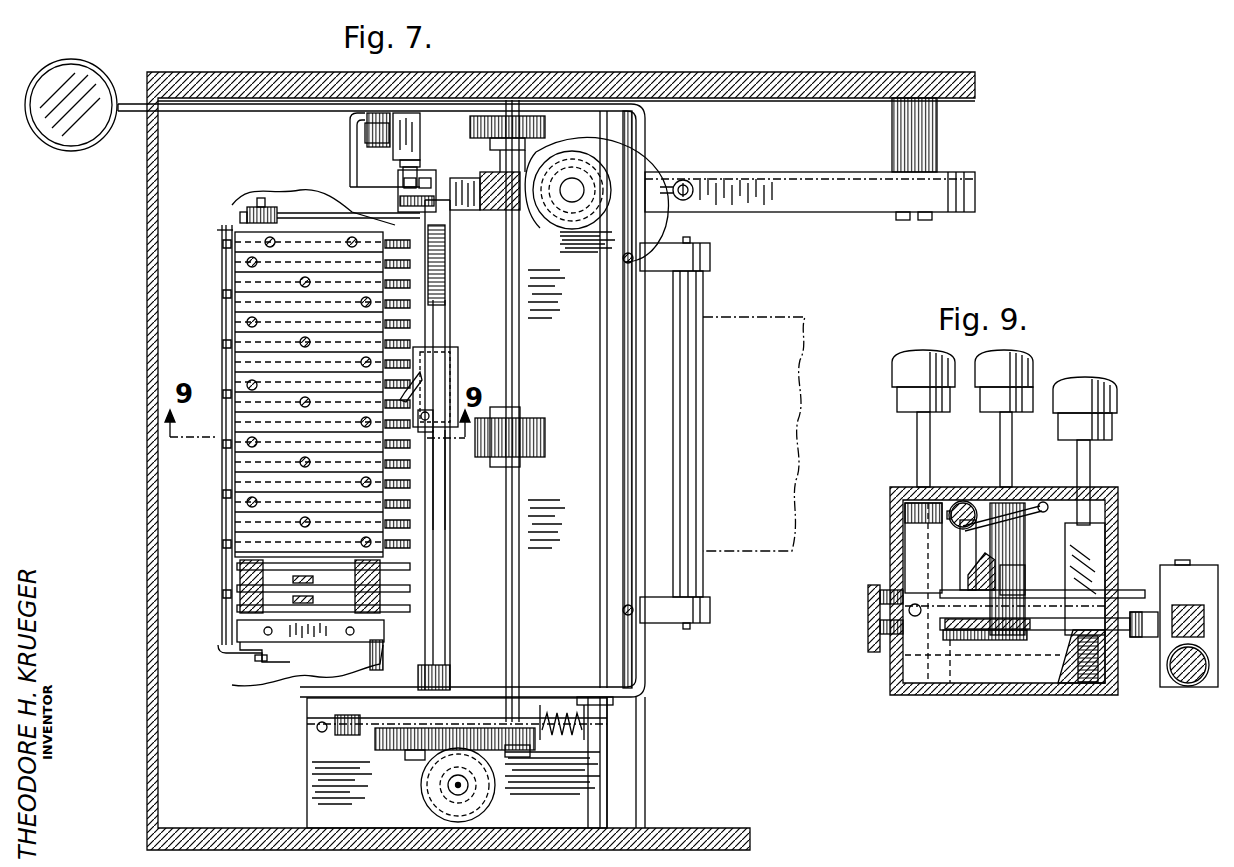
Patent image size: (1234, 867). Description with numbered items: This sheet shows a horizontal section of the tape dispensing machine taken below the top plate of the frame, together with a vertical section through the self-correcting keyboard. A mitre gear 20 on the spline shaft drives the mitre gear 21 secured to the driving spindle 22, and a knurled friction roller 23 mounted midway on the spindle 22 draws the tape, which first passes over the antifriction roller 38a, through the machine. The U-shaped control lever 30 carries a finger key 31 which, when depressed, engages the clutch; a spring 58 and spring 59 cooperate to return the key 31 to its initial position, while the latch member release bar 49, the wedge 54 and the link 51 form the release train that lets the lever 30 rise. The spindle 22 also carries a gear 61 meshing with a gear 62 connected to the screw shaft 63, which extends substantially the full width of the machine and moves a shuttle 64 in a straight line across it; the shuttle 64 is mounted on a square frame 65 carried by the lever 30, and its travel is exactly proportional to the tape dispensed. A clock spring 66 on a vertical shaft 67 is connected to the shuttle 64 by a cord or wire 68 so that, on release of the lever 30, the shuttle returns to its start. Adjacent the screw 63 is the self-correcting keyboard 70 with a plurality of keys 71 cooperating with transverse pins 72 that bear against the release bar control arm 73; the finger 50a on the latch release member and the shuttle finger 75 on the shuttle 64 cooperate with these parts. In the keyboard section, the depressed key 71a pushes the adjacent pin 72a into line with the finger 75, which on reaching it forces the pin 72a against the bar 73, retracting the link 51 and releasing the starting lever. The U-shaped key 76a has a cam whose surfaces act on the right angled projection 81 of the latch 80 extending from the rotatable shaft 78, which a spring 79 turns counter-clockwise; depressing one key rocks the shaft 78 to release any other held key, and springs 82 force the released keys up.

In FIG. 7, the mitre gear 20 is at (550, 165).
In FIG. 7, the mitre gear 21 is at (488, 177).
In FIG. 7, the driving spindle 22 is at (520, 278).
In FIG. 7, the knurled friction roller 23 is at (528, 426).
In FIG. 7, the control lever 30 is at (123, 97).
In FIG. 7, the finger key 31 is at (76, 80).
In FIG. 7, the antifriction roller 38a is at (704, 388).
In FIG. 7, the latch member release bar 49 is at (380, 665).
In FIG. 7, the finger 50a is at (428, 214).
In FIG. 7, the link 51 is at (293, 212).
In FIG. 7, the wedge 54 is at (225, 645).
In FIG. 7, the spring 58 is at (690, 181).
In FIG. 7, the spring 59 is at (549, 712).
In FIG. 7, the gear 61 is at (525, 738).
In FIG. 7, the gear 62 is at (397, 750).
In FIG. 7, the screw shaft 63 is at (452, 245).
In FIG. 9, the screw shaft 63 is at (1190, 687).
In FIG. 7, the shuttle 64 is at (442, 395).
In FIG. 9, the shuttle 64 is at (1192, 565).
In FIG. 7, the square frame 65 is at (452, 532).
In FIG. 7, the clock spring 66 is at (494, 778).
In FIG. 7, the vertical shaft 67 is at (455, 787).
In FIG. 7, the cord or wire 68 is at (450, 624).
In FIG. 7, the self-correcting keyboard 70 is at (263, 457).
In FIG. 7, the keys 71 is at (248, 384).
In FIG. 9, the key 71a is at (1091, 465).
In FIG. 7, the transverse pins 72 is at (233, 592).
In FIG. 9, the transverse pins 72 is at (1130, 590).
In FIG. 9, the pin 72a is at (1128, 636).
In FIG. 7, the release bar control arm 73 is at (222, 297).
In FIG. 9, the release bar control arm 73 is at (866, 627).
In FIG. 7, the shuttle finger 75 is at (420, 387).
In FIG. 9, the shuttle finger 75 is at (1152, 612).
In FIG. 9, the key 76a is at (1092, 542).
In FIG. 9, the rotatable shaft 78 is at (964, 501).
In FIG. 9, the spring 79 is at (1043, 501).
In FIG. 9, the latch 80 is at (960, 535).
In FIG. 9, the right angled projection 81 is at (968, 579).
In FIG. 9, the springs 82 is at (1088, 684).